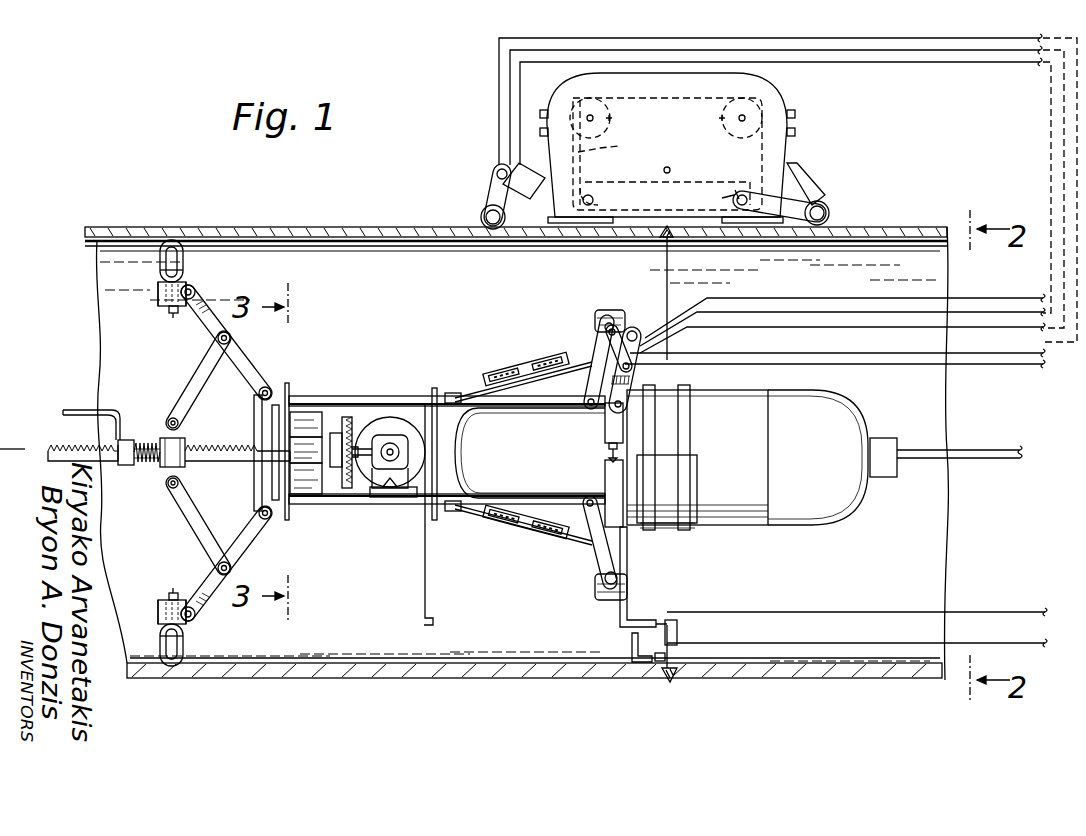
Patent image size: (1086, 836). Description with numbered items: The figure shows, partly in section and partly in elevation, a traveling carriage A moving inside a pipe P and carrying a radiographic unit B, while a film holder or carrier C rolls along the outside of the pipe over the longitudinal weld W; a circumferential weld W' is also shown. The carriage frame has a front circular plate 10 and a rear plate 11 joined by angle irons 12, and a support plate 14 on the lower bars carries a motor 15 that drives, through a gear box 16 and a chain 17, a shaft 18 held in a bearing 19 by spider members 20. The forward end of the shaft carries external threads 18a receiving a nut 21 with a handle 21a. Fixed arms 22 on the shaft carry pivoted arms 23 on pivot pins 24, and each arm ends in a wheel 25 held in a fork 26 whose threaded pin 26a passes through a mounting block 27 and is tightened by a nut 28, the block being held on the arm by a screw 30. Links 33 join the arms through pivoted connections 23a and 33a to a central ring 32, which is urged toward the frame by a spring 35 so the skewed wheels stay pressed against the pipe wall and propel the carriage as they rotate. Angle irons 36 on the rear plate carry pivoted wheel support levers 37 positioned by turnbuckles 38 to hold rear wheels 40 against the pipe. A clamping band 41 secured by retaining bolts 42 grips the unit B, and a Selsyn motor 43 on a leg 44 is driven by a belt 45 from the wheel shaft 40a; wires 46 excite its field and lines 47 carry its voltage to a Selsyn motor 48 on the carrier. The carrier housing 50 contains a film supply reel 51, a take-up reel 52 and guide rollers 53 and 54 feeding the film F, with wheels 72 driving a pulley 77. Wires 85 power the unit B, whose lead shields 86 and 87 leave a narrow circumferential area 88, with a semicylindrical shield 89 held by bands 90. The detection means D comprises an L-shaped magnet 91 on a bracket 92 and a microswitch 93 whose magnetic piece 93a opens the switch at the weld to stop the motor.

The front circular plate 10 is at (287, 383).
The rear plate 11 is at (434, 388).
The angle irons 12 is at (331, 397).
The support plate 14 is at (350, 470).
The motor 15 is at (370, 425).
The gear box 16 is at (392, 450).
The chain or belt 17 is at (350, 497).
The shaft 18 is at (339, 452).
The external threads 18a is at (205, 444).
The bearing 19 is at (300, 465).
The spider members 20 is at (300, 418).
The nut 21 is at (126, 462).
The handle 21a is at (80, 410).
The fixed arms 22 is at (254, 410).
The pivoted arms 23 is at (245, 362).
The pivoted connection 23a is at (218, 340).
The pivot pins 24 is at (268, 387).
The wheel 25 is at (183, 258).
The fork 26 is at (160, 278).
The threaded pin 26a is at (164, 299).
The mounting block 27 is at (180, 308).
The nut 28 is at (169, 310).
The bolt or screw 30 is at (196, 291).
The central ring 32 is at (182, 462).
The links 33 is at (200, 373).
The pivoted connection 33a is at (170, 418).
The spring 35 is at (130, 440).
The angle irons 36 is at (497, 413).
The pivoted wheel support lever 37 is at (600, 355).
The turnbuckle 38 is at (495, 376).
The wheels 40 is at (597, 318).
The shaft 40a is at (608, 320).
The clamping band 41 is at (604, 425).
The retaining means 42 is at (608, 446).
The Selsyn motor 43 is at (636, 332).
The leg 44 is at (632, 380).
The belt 45 is at (606, 340).
The electrical wires 46 is at (862, 354).
The lines 47 is at (801, 312).
The Selsyn motor 48 is at (488, 170).
The housing 50 is at (765, 92).
The film supply reel 51 is at (612, 119).
The film take-up reel 52 is at (718, 119).
The guide roller 53 is at (600, 178).
The guide roller 54 is at (736, 199).
The wheel 72 is at (481, 213).
The pulley 77 is at (803, 185).
The electrical wires 85 is at (962, 452).
The lead shield 86 is at (625, 528).
The lead shield 87 is at (722, 512).
The circumferential area 88 is at (672, 410).
The semicylindrical shield 89 is at (665, 525).
The metallic circular bands 90 is at (650, 443).
The L-shaped permanent magnet 91 is at (630, 656).
The bracket 92 is at (630, 600).
The microswitch 93 is at (678, 636).
The magnetic piece 93a is at (667, 656).
The traveling carriage A is at (380, 395).
The radiographic unit B is at (824, 463).
The film holder or carrier C is at (665, 151).
The detection means D is at (807, 635).
The film F is at (618, 150).
The weld W is at (516, 426).
The circumferential weld W' is at (680, 475).
The pipe P is at (330, 678).